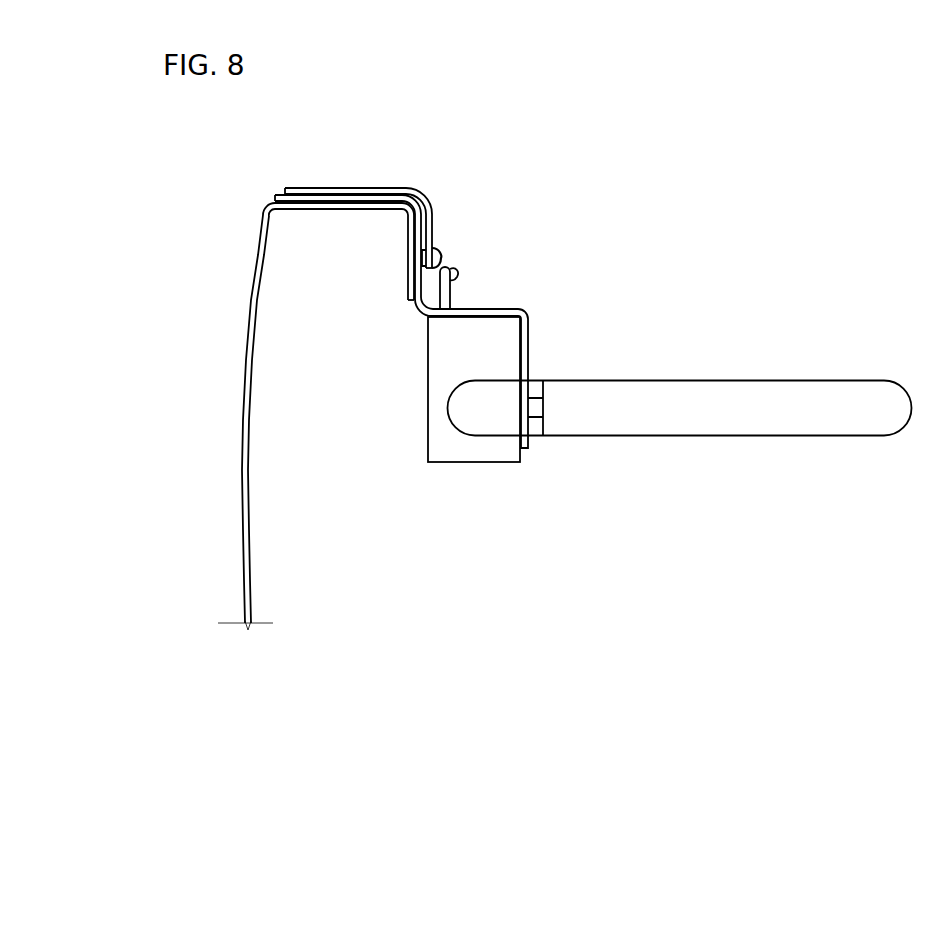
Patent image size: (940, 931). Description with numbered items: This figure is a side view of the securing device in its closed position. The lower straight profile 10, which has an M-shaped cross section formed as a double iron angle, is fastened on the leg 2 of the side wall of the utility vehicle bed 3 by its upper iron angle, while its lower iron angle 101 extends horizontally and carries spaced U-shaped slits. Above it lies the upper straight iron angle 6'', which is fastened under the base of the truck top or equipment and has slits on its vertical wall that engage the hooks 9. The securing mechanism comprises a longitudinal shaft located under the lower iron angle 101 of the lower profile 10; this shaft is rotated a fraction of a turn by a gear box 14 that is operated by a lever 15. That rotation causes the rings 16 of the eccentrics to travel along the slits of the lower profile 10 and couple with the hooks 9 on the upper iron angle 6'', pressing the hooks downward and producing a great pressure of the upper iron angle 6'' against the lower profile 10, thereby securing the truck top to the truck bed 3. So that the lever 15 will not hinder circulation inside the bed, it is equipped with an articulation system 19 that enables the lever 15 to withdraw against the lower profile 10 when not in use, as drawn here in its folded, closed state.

The leg 2 is at (318, 209).
The utility vehicle bed 3 is at (247, 418).
The upper straight iron angle 6'' is at (358, 179).
The hook 9 is at (440, 252).
The lower straight profile 10 is at (381, 197).
The gear box 14 is at (473, 453).
The lever 15 is at (733, 418).
The ring 16 is at (447, 297).
The articulation system 19 is at (537, 432).
The lower iron angle 101 is at (526, 313).